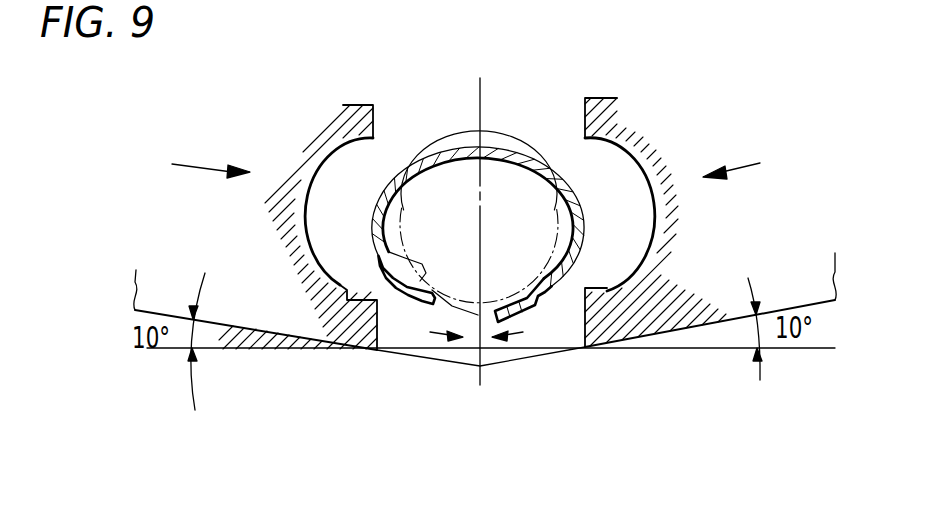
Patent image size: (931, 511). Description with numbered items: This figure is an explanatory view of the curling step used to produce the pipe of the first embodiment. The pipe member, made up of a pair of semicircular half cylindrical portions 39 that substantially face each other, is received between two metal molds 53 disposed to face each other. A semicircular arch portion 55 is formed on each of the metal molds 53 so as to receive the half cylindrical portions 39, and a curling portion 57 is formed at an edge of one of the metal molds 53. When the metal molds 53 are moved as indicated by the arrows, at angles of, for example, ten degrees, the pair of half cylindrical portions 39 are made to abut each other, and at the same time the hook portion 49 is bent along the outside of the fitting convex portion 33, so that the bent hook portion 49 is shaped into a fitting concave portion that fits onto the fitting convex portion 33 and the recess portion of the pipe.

The fitting convex portion 33 is at (432, 300).
The half cylindrical portion 39 is at (395, 165).
The hook portion 49 is at (520, 318).
The metal mold 53 is at (347, 132).
The semicircular arch portion 55 is at (310, 183).
The curling portion 57 is at (378, 345).